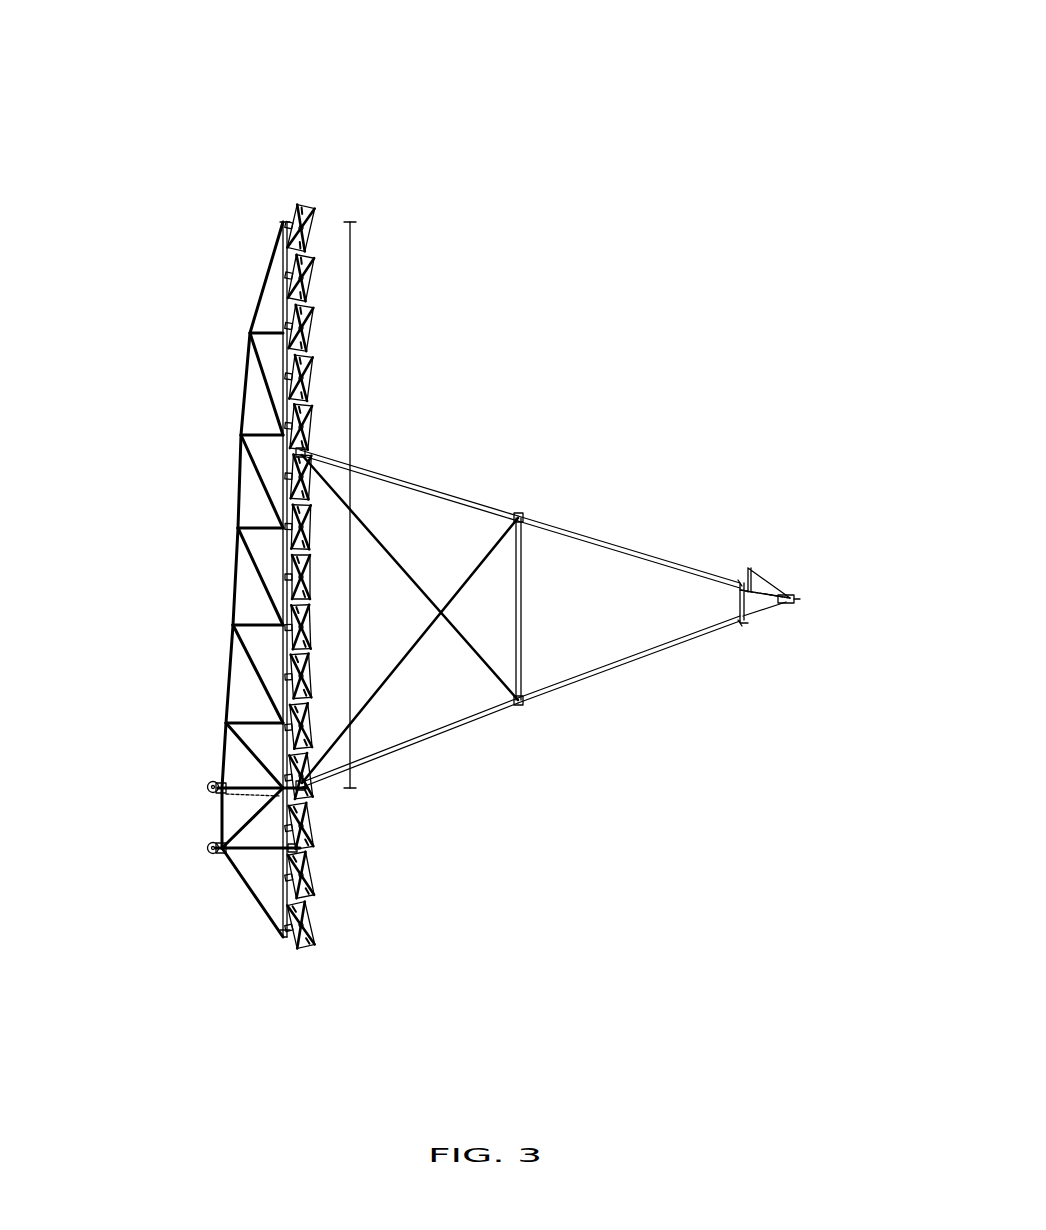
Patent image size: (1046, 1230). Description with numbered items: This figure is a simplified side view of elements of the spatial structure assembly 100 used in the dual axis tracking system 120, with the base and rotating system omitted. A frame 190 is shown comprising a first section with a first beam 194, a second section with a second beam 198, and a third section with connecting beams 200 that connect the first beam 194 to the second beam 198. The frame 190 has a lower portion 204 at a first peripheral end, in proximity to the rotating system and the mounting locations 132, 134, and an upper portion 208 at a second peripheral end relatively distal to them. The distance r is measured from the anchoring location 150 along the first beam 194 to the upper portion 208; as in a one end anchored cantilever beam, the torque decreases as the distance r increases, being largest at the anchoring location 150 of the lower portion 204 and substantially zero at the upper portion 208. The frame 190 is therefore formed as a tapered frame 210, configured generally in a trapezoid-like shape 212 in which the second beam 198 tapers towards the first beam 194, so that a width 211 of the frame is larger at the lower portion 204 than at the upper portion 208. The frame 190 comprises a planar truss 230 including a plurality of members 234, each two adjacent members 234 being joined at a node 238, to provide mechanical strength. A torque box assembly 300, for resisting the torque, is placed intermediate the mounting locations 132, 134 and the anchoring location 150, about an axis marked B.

The dual axis tracking system 120 is at (712, 68).
The spatial structure assembly 100 is at (210, 450).
The frame 190 is at (129, 681).
The upper portion 208 is at (243, 257).
The trapezoid-like shape 212 is at (232, 588).
The tapered frame 210 is at (188, 690).
The node 238 is at (250, 333).
The second beam 198 is at (238, 531).
The members 234 is at (266, 585).
The planar truss 230 is at (215, 625).
The pivot axis B is at (197, 815).
The anchoring location 150 is at (210, 787).
The torque box assembly 300 is at (196, 804).
The lower portion 204 is at (196, 840).
The mounting location 132 is at (142, 889).
The mounting location 134 is at (213, 852).
The width of the frame 211 is at (285, 875).
The connecting beams 200 is at (283, 222).
The first beam 194 is at (297, 848).
The distance r is at (351, 378).